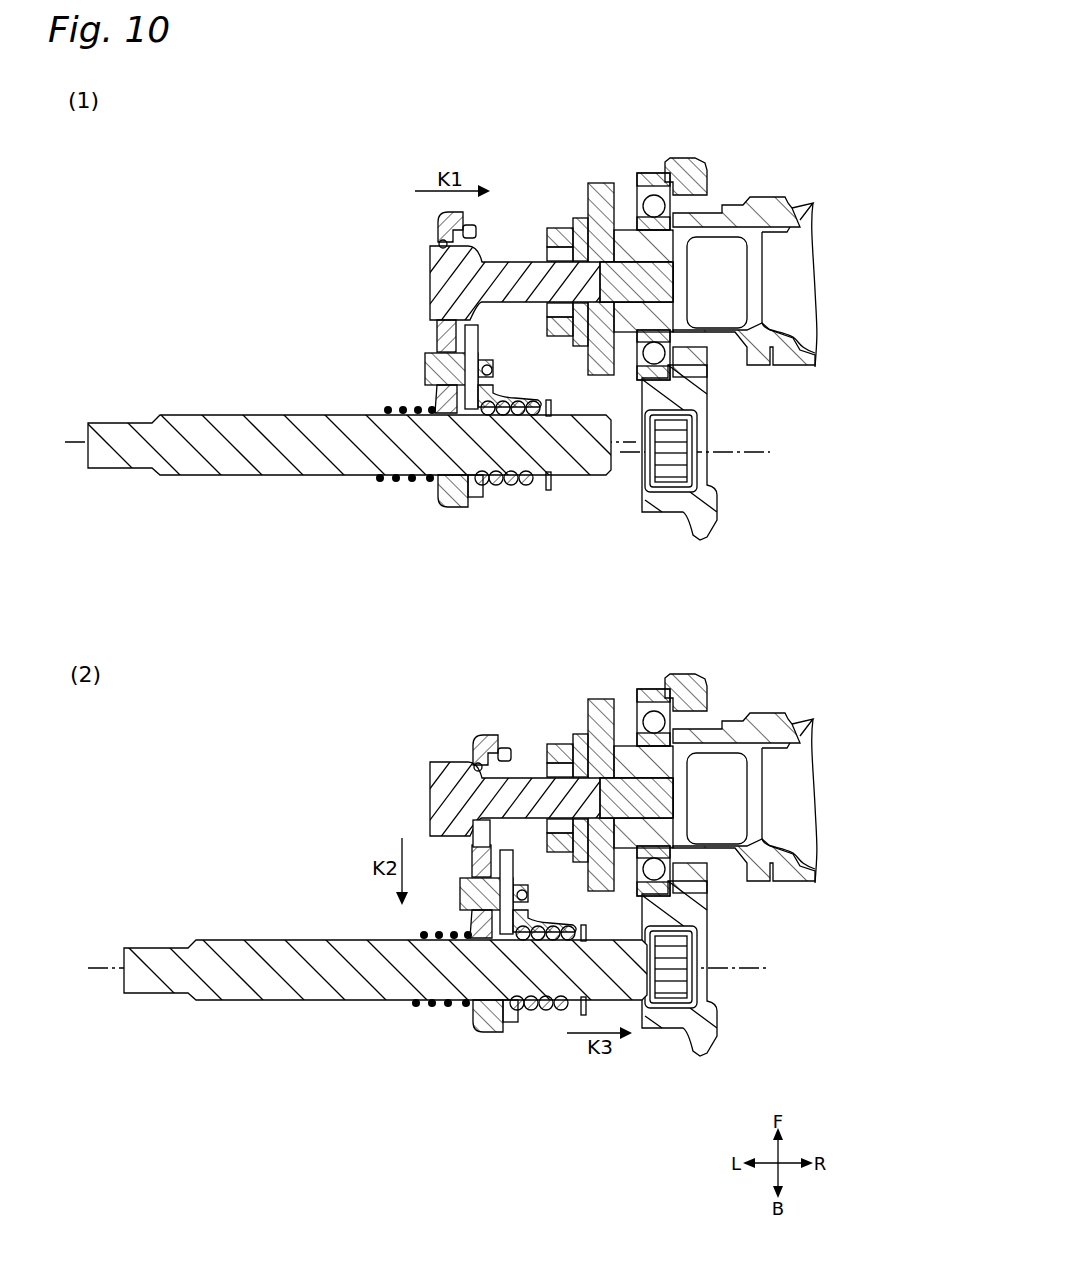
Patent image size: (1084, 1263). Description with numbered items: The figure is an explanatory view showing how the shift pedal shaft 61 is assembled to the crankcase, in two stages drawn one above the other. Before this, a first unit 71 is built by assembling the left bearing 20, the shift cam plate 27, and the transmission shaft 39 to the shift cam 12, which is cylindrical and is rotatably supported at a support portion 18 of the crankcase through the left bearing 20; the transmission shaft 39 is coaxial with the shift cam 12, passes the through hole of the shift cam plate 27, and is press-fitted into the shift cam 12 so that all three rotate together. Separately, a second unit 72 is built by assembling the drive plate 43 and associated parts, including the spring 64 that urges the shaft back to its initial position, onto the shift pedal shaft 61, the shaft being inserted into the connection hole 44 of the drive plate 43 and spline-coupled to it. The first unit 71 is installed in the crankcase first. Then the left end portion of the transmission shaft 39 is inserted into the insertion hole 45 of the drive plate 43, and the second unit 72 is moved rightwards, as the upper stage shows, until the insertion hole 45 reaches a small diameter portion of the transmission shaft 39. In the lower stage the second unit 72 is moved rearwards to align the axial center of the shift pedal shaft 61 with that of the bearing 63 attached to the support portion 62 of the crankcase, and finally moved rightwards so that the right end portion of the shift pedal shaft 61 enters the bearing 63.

The shift cam 12 is at (770, 197).
The support portion 18 is at (706, 174).
The left bearing 20 is at (650, 185).
The shift cam plate 27 is at (585, 215).
The transmission shaft 39 is at (518, 261).
The drive plate 43 is at (434, 331).
The connection hole 44 is at (438, 476).
The insertion hole 45 is at (441, 244).
The shift pedal shaft 61 is at (262, 415).
The support portion 62 is at (712, 503).
The bearing 63 is at (698, 431).
The spring 64 is at (514, 488).
The first unit 71 is at (526, 157).
The second unit 72 is at (346, 515).